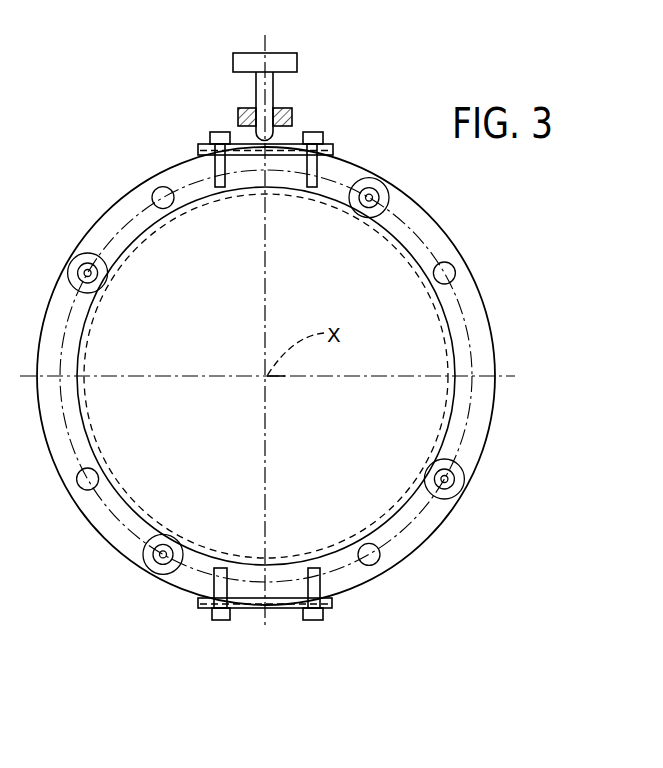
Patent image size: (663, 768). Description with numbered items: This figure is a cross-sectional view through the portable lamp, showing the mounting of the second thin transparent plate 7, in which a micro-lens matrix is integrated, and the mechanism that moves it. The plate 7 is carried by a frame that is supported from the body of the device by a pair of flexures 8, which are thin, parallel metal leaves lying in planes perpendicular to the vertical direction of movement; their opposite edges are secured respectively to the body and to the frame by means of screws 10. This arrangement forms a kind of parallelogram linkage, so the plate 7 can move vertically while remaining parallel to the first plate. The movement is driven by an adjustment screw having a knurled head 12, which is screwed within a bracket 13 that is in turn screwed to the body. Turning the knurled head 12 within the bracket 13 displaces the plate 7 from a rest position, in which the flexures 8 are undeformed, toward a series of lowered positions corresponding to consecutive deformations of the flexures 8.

The second thin transparent plate 7 is at (437, 340).
The flexures 8 is at (284, 153).
The screws 10 is at (214, 138).
The knurled head 12 is at (268, 85).
The bracket 13 is at (293, 113).